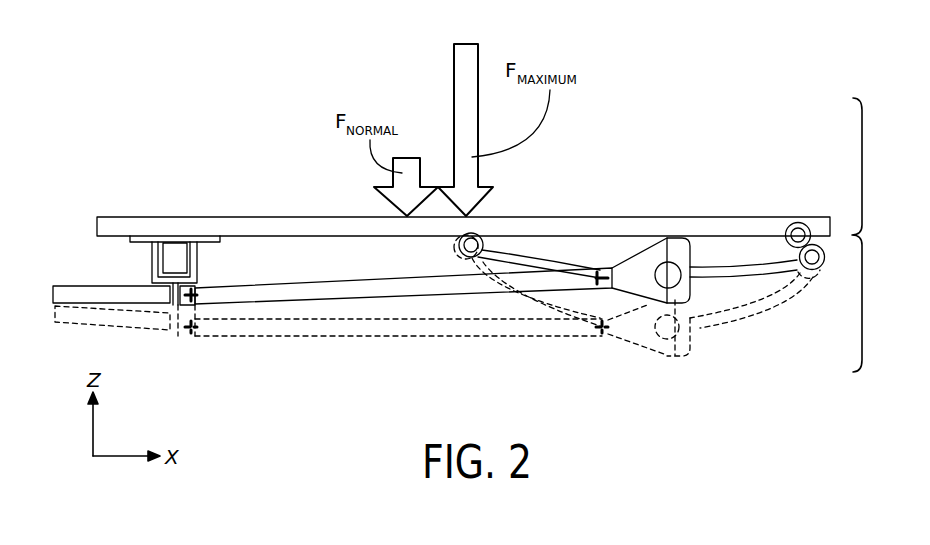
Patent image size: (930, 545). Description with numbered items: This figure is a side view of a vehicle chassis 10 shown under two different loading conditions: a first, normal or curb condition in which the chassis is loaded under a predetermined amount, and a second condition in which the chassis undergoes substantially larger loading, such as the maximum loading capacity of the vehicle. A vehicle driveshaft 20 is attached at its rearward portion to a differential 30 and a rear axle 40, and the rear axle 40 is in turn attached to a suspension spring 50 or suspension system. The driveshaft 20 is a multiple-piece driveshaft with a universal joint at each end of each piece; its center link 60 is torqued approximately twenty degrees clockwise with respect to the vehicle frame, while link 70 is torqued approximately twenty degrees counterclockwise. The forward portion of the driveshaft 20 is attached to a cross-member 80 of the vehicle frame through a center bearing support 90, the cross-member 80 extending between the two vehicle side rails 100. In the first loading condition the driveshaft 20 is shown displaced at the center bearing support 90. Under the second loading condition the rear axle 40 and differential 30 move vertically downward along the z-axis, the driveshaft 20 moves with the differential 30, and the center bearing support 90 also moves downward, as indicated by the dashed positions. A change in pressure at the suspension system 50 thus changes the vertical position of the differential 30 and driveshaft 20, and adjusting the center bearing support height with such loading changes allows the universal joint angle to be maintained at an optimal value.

The vehicle chassis 10 is at (873, 235).
The driveshaft 20 is at (258, 295).
The differential 30 is at (628, 272).
The rear axle 40 is at (670, 268).
The suspension spring 50 is at (727, 272).
The center link 60 is at (417, 273).
The link 70 is at (130, 295).
The cross-member 80 is at (168, 253).
The center bearing support 90 is at (178, 336).
The vehicle side rails 100 is at (243, 225).